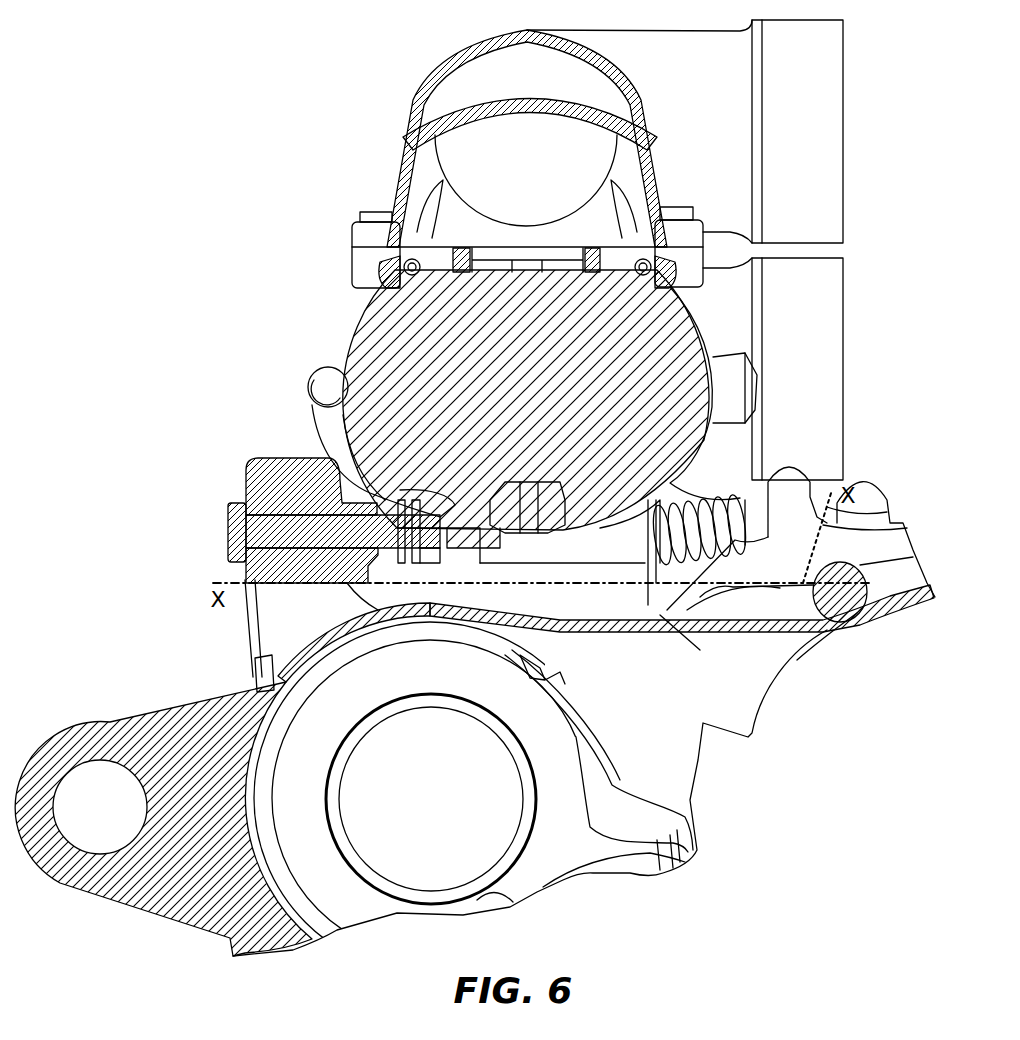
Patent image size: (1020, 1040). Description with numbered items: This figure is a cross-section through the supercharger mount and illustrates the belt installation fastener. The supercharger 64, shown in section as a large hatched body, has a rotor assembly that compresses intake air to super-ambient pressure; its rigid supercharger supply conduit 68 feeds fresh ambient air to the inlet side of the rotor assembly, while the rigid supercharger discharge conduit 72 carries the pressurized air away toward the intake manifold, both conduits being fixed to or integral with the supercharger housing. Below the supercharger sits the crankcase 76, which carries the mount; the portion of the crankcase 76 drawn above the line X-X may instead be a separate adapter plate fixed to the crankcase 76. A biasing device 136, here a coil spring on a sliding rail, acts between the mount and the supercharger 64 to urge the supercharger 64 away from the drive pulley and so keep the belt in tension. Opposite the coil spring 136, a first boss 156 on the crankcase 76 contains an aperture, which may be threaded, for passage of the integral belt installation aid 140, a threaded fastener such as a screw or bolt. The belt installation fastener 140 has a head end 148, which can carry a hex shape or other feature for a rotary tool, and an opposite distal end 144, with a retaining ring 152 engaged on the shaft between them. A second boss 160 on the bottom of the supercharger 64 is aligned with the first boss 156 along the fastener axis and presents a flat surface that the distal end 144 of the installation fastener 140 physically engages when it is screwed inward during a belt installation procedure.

The supercharger 64 is at (338, 316).
The supercharger supply conduit 68 is at (822, 343).
The supercharger discharge conduit 72 is at (820, 134).
The crankcase 76 is at (127, 717).
The biasing device 136 is at (680, 502).
The belt installation aid 140 is at (300, 597).
The distal end 144 is at (440, 575).
The head end 148 is at (222, 548).
The retaining ring 152 is at (420, 575).
The first boss 156 is at (267, 458).
The second boss 160 is at (493, 550).